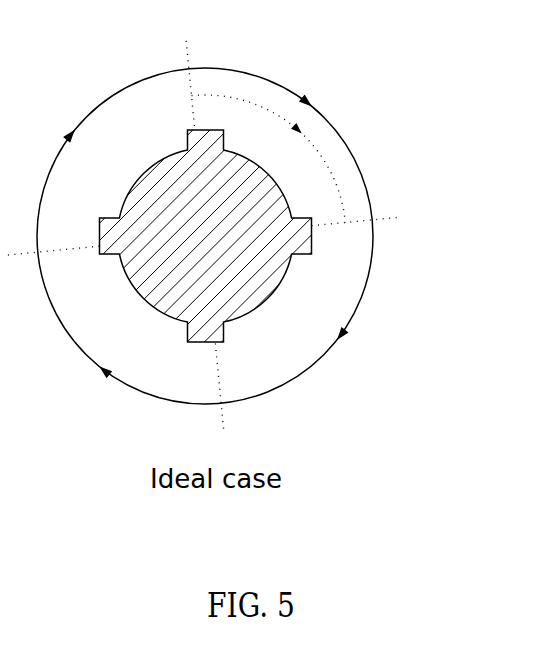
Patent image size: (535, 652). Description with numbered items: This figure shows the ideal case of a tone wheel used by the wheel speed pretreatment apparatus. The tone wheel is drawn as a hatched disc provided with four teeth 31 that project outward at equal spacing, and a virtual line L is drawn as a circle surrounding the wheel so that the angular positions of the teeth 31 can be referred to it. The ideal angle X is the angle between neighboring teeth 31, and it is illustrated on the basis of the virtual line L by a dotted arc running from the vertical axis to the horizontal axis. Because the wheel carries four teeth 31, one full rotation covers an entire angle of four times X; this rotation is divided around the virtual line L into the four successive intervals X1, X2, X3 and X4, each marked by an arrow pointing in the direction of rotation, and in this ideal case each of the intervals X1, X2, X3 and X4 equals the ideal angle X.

The teeth 31 is at (307, 233).
The virtual line L is at (395, 217).
The ideal angle X is at (268, 159).
The first angle interval X1 is at (328, 105).
The second angle interval X2 is at (354, 348).
The third angle interval X3 is at (82, 362).
The fourth angle interval X4 is at (55, 123).